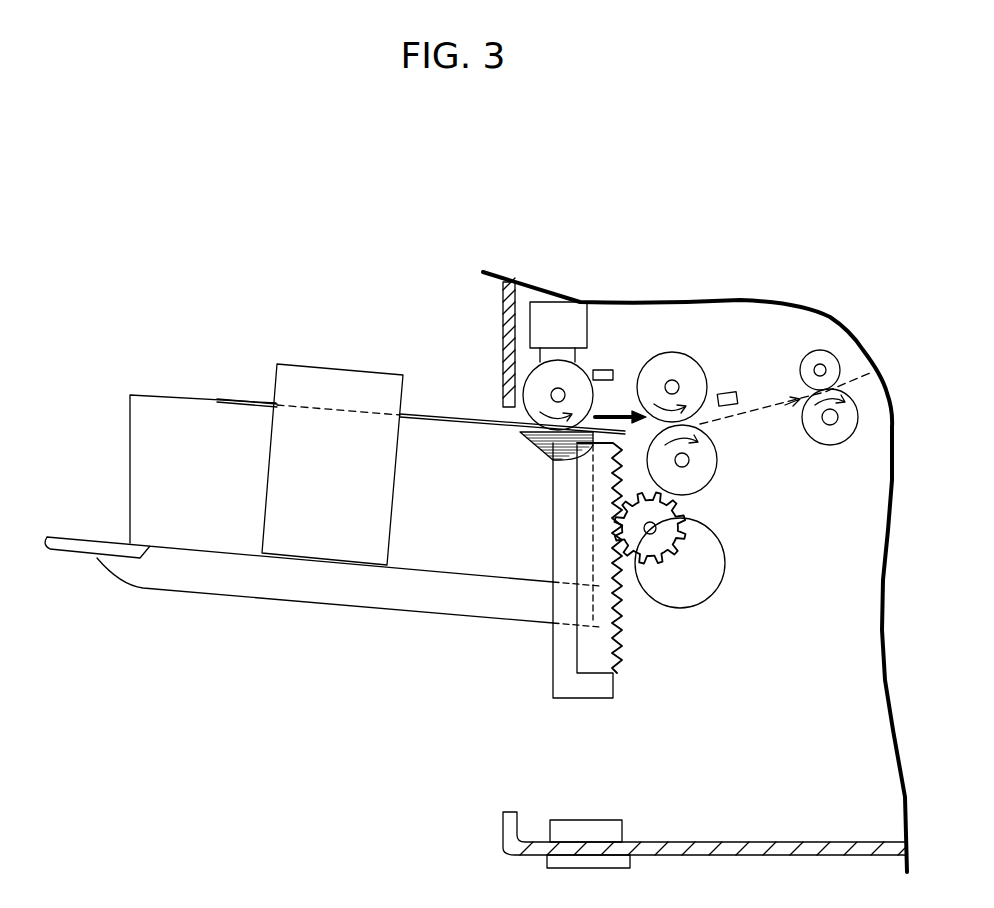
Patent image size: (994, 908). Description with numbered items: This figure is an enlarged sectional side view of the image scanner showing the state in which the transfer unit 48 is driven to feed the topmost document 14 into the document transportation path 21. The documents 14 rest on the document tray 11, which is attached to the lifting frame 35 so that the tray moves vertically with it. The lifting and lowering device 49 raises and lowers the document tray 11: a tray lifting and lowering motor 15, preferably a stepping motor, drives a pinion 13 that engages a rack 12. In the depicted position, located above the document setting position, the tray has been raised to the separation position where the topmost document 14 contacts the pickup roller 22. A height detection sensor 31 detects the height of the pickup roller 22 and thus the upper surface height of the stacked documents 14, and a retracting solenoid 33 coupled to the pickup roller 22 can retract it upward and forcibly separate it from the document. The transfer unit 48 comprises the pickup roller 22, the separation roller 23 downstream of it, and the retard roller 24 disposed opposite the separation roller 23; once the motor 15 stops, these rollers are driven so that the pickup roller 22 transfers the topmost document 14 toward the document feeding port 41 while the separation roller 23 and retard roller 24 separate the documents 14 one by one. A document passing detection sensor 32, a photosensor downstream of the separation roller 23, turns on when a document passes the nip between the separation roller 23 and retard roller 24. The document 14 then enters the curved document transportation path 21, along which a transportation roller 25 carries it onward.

The document tray 11 is at (155, 619).
The rack 12 is at (612, 660).
The pinion 13 is at (668, 535).
The document 14 is at (240, 395).
The tray lifting and lowering motor 15 is at (693, 592).
The document transportation path 21 is at (867, 378).
The pickup roller 22 is at (538, 382).
The separation roller 23 is at (688, 357).
The retard roller 24 is at (703, 463).
The transportation roller 25 is at (843, 433).
The height detection sensor 31 is at (603, 370).
The document passing detection sensor 32 is at (740, 392).
The retracting solenoid 33 is at (553, 320).
The lifting frame 35 is at (567, 683).
The document feeding port 41 is at (472, 410).
The transfer unit 48 is at (519, 461).
The lifting and lowering device 49 is at (775, 262).